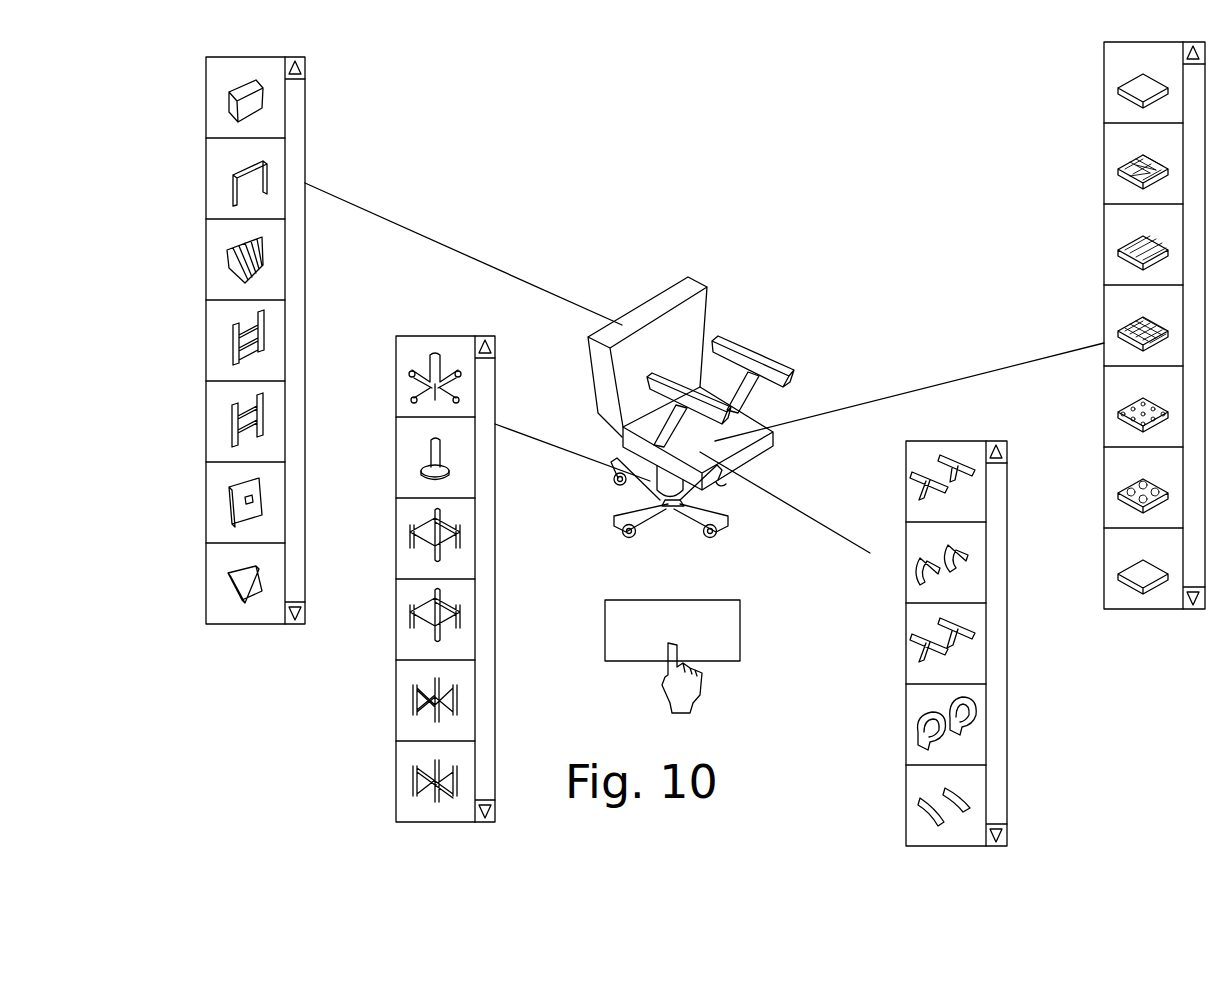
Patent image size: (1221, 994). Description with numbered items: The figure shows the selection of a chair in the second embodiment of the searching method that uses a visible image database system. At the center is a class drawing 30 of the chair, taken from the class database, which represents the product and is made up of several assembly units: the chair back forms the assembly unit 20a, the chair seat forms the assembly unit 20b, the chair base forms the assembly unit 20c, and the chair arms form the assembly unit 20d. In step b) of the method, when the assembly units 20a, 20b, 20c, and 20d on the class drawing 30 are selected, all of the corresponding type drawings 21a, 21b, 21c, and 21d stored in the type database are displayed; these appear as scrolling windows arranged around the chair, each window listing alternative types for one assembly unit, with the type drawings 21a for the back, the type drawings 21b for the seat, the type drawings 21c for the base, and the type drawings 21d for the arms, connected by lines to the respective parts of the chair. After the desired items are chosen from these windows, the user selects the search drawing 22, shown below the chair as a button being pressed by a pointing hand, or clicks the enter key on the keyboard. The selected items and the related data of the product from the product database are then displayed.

The assembly unit 20a is at (643, 310).
The assembly unit 20b is at (737, 423).
The assembly unit 20c is at (638, 502).
The assembly unit 20d is at (780, 368).
The class drawing 30 is at (760, 343).
The type drawing 21a is at (213, 120).
The type drawing 21b is at (1110, 101).
The type drawing 21c is at (400, 762).
The type drawing 21d is at (922, 458).
The search drawing 22 is at (725, 613).